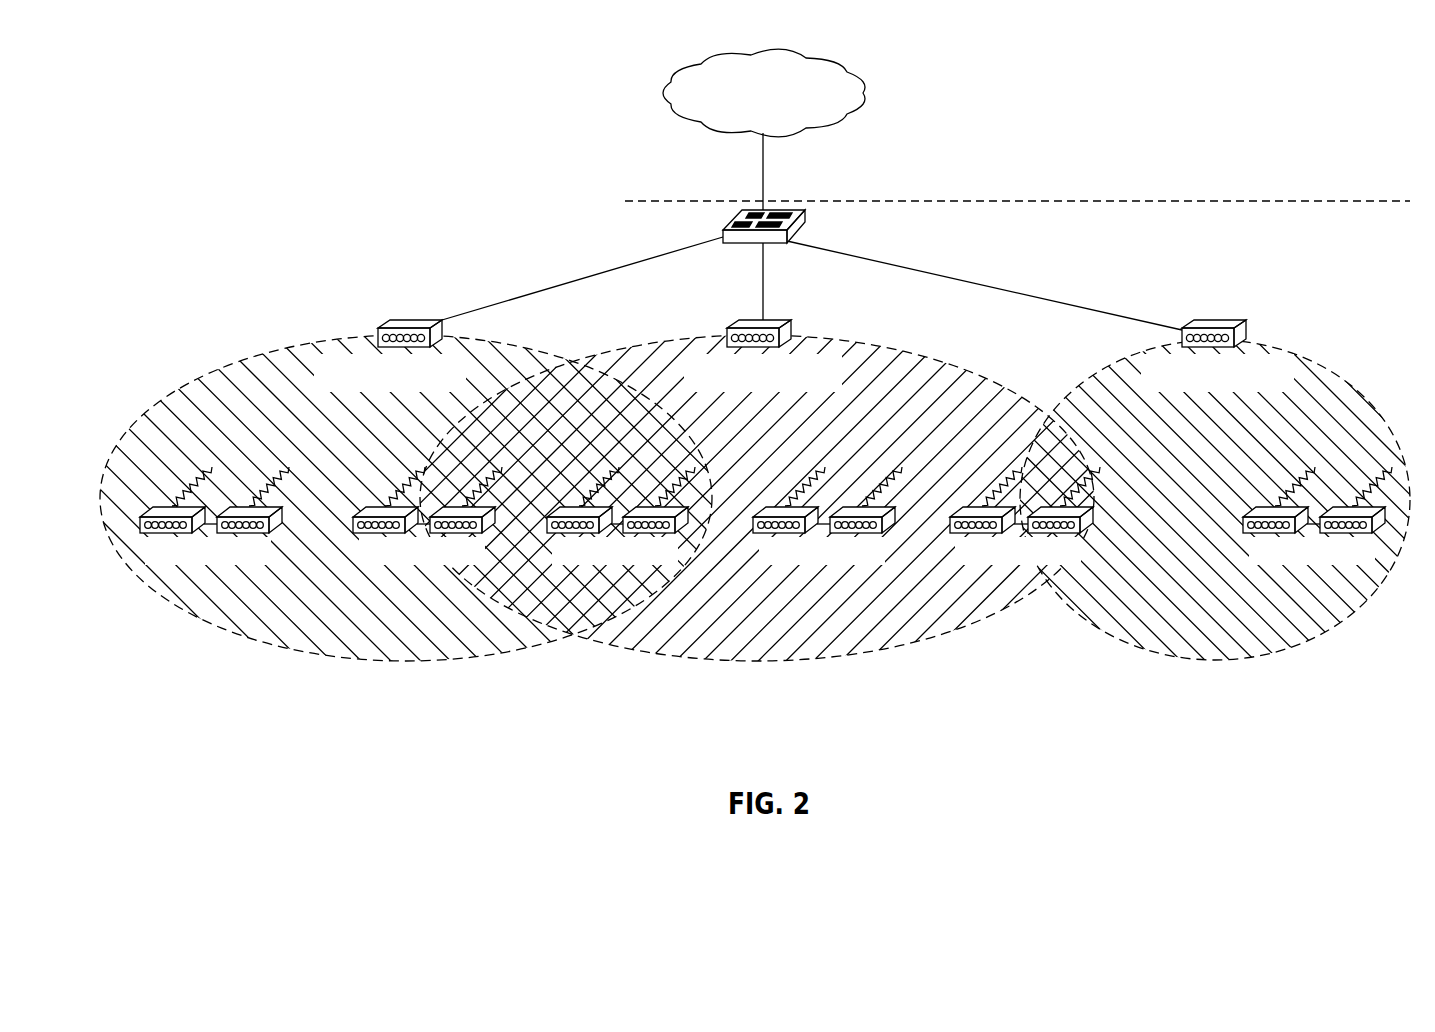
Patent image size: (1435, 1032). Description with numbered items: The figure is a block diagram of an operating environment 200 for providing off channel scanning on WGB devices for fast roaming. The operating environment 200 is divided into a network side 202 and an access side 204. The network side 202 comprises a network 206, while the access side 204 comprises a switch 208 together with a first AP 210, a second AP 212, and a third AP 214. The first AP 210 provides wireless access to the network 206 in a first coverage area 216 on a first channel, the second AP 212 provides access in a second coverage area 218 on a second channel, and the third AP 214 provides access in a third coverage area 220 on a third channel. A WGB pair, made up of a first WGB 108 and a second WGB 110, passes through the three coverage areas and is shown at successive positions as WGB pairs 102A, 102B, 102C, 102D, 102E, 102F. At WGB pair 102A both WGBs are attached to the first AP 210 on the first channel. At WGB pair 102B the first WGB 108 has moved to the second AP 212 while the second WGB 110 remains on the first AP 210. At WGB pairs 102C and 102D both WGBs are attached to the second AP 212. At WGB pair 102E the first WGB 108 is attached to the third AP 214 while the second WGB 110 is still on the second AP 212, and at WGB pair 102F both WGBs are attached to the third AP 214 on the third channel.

The operating environment 200 is at (283, 74).
The network side 202 is at (1367, 190).
The access side 204 is at (1367, 241).
The network 206 is at (683, 74).
The switch 208 is at (744, 210).
The first AP 210 is at (399, 320).
The second AP 212 is at (746, 320).
The third AP 214 is at (1203, 320).
The first coverage area 216 is at (230, 365).
The second coverage area 218 is at (668, 337).
The third coverage area 220 is at (1094, 372).
The WGB pair at position A 102A is at (238, 595).
The WGB pair at position B 102B is at (450, 595).
The WGB pair at position C 102C is at (648, 595).
The WGB pair at position D 102D is at (849, 595).
The WGB pair at position E 102E is at (1020, 595).
The WGB pair at position F 102F is at (1341, 595).
The first WGB 108 is at (787, 558).
The second WGB 110 is at (161, 505).